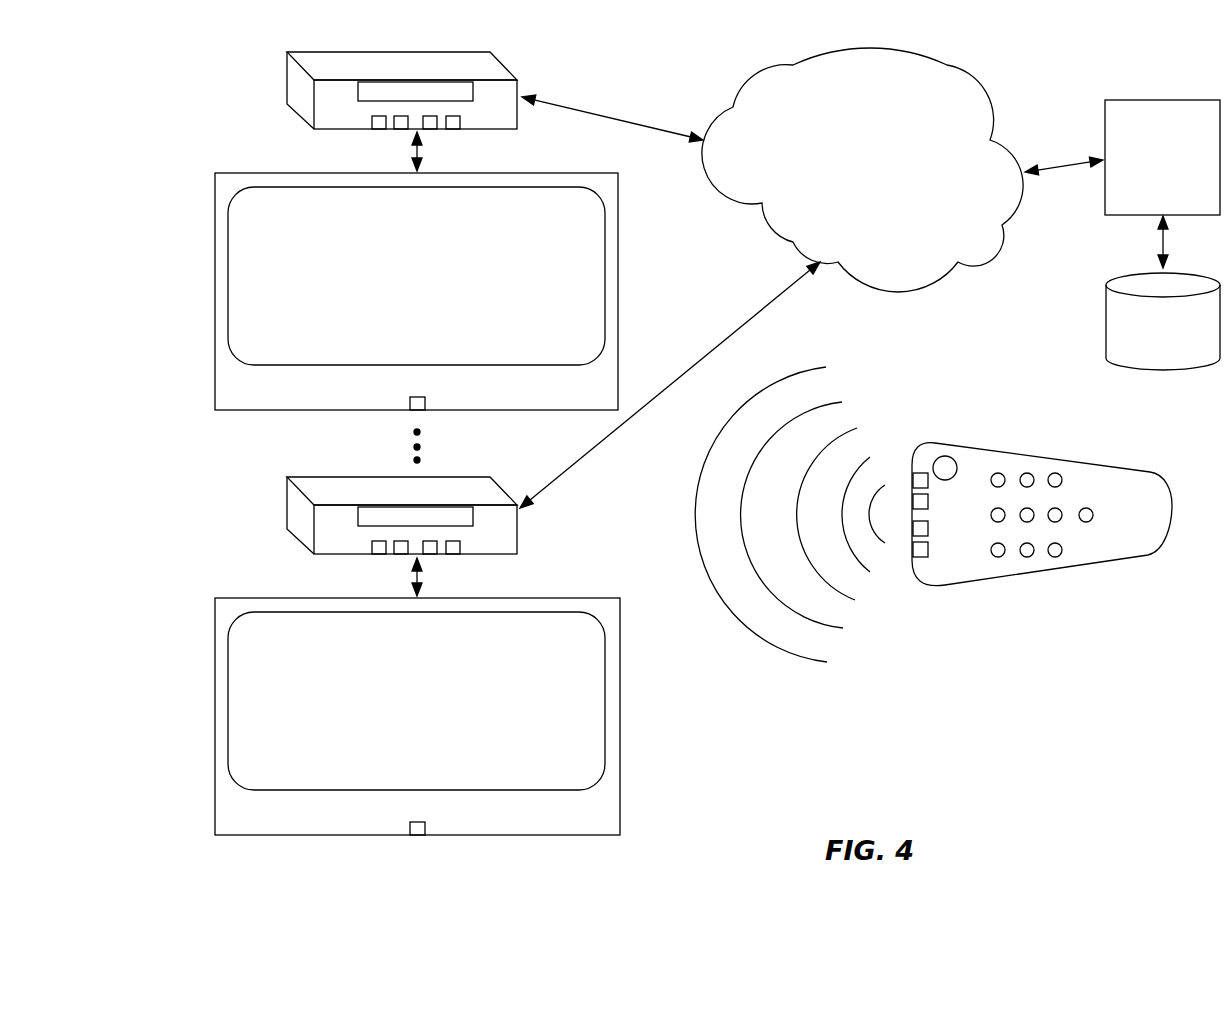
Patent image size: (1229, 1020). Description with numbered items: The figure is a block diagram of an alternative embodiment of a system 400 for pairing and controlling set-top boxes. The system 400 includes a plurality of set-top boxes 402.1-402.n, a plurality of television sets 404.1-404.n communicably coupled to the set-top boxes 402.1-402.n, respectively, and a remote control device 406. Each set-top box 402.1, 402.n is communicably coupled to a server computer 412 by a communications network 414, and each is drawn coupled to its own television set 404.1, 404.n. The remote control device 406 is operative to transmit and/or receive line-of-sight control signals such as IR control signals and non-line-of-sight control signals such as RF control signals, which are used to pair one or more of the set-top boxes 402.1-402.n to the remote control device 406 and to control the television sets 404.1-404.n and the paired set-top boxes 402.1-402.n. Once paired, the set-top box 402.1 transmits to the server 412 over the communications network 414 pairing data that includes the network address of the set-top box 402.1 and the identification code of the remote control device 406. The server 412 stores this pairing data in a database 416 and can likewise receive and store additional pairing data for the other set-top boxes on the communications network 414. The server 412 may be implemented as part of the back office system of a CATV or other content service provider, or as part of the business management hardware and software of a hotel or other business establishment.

The system 400 is at (970, 731).
The set-top box 402.1 is at (287, 80).
The set-top box 402.n is at (287, 505).
The television set 404.1 is at (215, 200).
The television set 404.n is at (215, 628).
The remote control device 406 is at (1003, 448).
The server computer 412 is at (1149, 179).
The communications network 414 is at (848, 189).
The database 416 is at (1149, 354).